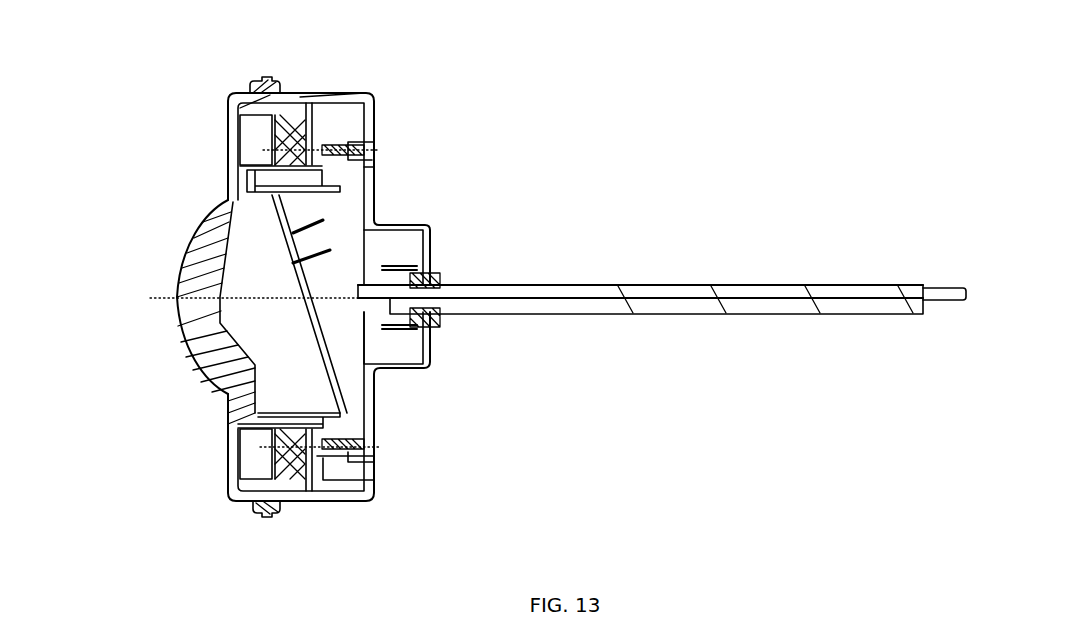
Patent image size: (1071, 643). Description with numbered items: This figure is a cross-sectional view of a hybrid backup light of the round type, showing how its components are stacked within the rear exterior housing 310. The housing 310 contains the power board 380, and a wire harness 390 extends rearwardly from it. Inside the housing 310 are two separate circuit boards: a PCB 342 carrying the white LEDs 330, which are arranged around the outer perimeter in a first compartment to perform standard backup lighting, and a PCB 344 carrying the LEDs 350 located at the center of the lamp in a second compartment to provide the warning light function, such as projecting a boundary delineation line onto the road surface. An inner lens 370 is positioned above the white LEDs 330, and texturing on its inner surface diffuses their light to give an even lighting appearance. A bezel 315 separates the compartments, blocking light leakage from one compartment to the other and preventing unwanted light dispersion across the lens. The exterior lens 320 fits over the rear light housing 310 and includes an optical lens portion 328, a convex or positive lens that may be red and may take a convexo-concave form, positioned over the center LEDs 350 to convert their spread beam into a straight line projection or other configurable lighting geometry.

The rear exterior housing 310 is at (402, 223).
The bezel 315 is at (245, 428).
The exterior lens 320 is at (229, 423).
The optical lens portion 328 is at (190, 357).
The white LEDs 330 is at (301, 448).
The PCB 342 is at (295, 288).
The PCB 344 is at (300, 125).
The LEDs 350 is at (289, 306).
The inner lens 370 is at (240, 93).
The power board 380 is at (377, 102).
The wire harness 390 is at (552, 285).